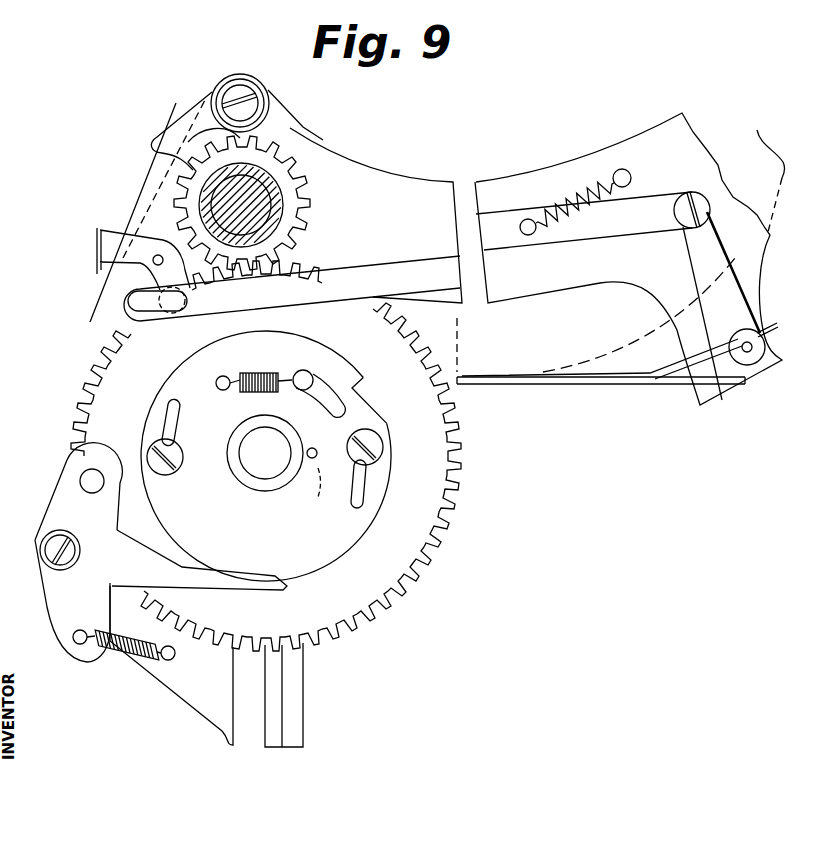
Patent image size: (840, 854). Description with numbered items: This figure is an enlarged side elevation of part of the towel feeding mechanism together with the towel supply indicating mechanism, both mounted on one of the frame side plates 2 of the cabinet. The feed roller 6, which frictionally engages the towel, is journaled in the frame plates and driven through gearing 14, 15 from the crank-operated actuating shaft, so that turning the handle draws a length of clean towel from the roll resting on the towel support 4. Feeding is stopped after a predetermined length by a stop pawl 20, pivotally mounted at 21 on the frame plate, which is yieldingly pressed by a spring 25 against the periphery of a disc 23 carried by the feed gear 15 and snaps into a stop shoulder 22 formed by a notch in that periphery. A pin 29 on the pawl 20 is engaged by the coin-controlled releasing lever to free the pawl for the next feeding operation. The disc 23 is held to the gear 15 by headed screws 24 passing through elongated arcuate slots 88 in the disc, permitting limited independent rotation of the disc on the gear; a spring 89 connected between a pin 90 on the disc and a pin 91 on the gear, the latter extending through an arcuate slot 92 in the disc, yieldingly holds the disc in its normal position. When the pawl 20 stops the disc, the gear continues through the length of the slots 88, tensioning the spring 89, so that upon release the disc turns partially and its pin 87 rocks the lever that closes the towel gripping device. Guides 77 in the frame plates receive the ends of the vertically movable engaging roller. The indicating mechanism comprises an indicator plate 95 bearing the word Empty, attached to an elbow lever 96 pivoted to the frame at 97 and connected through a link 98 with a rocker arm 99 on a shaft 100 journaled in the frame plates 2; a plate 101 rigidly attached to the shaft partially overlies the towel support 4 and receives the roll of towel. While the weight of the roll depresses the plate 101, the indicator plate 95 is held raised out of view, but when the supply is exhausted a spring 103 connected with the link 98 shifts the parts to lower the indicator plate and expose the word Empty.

The side plate 2 is at (393, 183).
The towel support 4 is at (617, 381).
The feed roller 6 is at (250, 195).
The gearing 14 is at (300, 222).
The feed gear 15 is at (447, 469).
The stop pawl 20 is at (280, 585).
The pawl pivot 21 is at (52, 547).
The stop shoulder 22 is at (362, 388).
The disc 23 is at (328, 538).
The headed screws 24 is at (174, 466).
The spring 25 is at (125, 652).
The pin 29 is at (80, 481).
The guides 77 is at (255, 700).
The pin 87 is at (314, 449).
The arcuate slots 88 is at (172, 428).
The spring 89 is at (261, 372).
The pin 90 is at (222, 377).
The pin 91 is at (312, 370).
The slot 92 is at (320, 404).
The indicator plate 95 is at (104, 204).
The elbow lever 96 is at (117, 190).
The lever pivot 97 is at (158, 254).
The link 98 is at (408, 272).
The rocker arm 99 is at (728, 284).
The shaft 100 is at (748, 347).
The plate 101 is at (573, 377).
The spring 103 is at (560, 208).